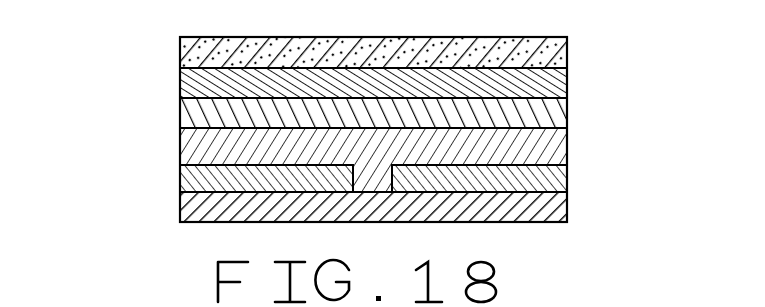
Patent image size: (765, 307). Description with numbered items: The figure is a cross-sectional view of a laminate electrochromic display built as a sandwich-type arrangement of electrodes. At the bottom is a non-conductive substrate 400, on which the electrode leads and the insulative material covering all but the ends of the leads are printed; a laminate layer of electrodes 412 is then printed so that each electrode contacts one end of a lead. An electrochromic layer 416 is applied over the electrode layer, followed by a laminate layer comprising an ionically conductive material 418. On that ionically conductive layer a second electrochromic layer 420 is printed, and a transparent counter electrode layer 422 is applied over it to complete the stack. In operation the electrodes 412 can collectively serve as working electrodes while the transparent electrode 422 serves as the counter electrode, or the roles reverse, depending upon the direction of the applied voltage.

The substrate 400 is at (533, 213).
The electrodes 412 is at (537, 178).
The electrochromic layer 416 is at (533, 146).
The ionically conductive material 418 is at (530, 113).
The second electrochromic layer 420 is at (530, 83).
The transparent counter electrode layer 422 is at (530, 53).